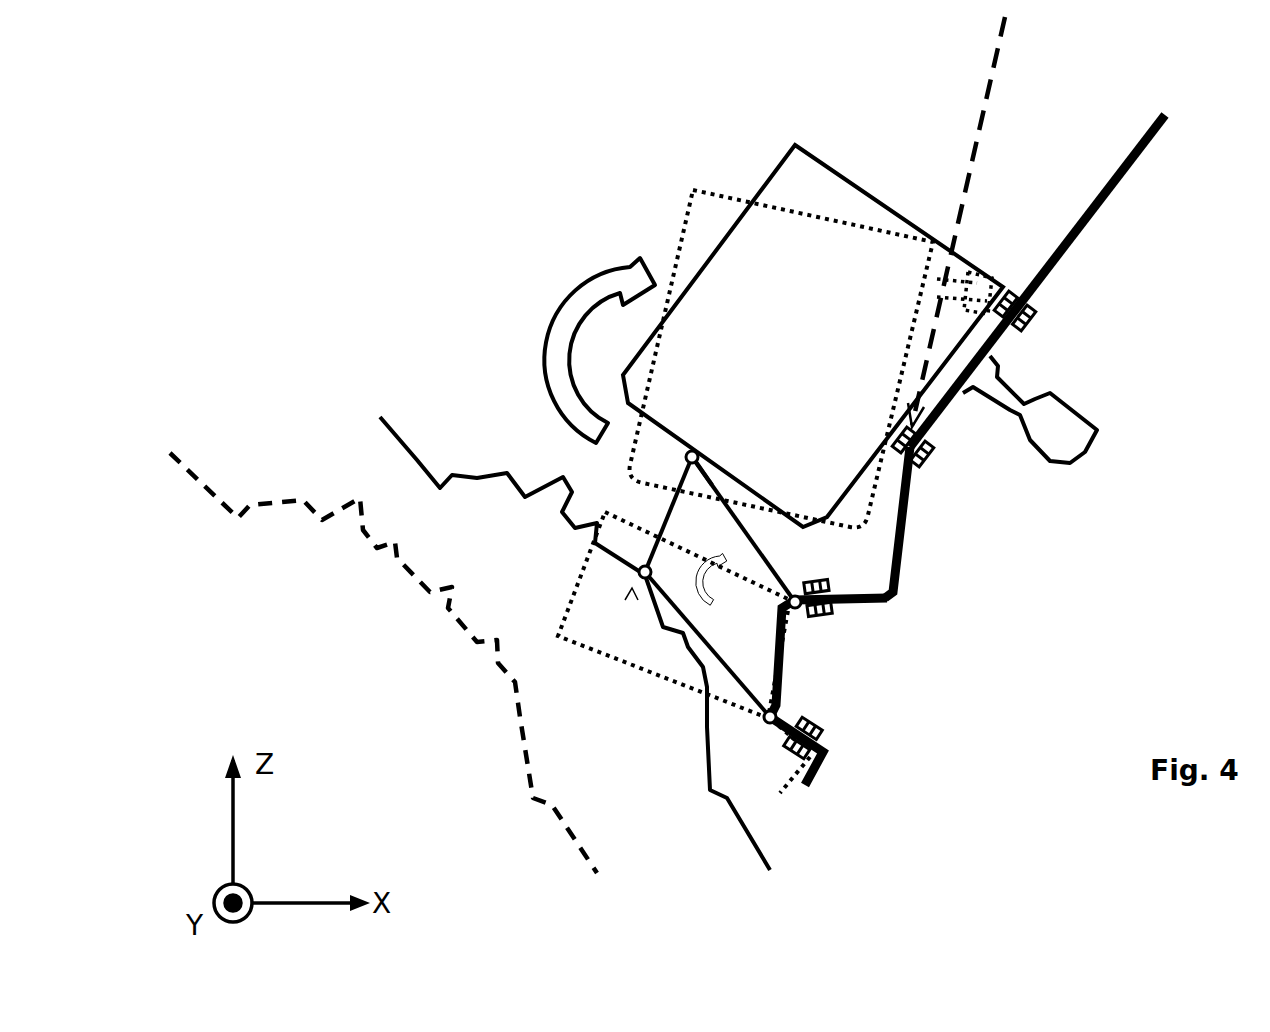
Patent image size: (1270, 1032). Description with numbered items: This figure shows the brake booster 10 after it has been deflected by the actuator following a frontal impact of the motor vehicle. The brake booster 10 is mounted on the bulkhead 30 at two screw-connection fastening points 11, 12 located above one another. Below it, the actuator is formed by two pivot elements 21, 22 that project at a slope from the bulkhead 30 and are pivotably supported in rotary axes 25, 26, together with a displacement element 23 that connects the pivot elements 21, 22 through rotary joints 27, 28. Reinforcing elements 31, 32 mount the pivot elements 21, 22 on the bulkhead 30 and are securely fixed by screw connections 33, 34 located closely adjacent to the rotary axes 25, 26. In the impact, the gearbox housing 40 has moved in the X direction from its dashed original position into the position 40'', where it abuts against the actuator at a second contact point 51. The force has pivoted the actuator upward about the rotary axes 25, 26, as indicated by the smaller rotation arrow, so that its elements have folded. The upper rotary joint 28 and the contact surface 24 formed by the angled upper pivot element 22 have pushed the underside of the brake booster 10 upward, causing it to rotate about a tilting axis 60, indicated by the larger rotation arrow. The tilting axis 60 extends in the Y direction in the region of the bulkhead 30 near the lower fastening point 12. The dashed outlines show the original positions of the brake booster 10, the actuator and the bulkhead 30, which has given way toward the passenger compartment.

The brake booster 10 is at (816, 180).
The fastening point 11 is at (1037, 314).
The lower fastening point 12 is at (947, 450).
The pivot element 21 is at (727, 673).
The upper pivot element 22 is at (742, 507).
The displacement element 23 is at (663, 520).
The contact surface 24 is at (706, 476).
The rotary axis 25 is at (770, 725).
The rotary axis 26 is at (787, 597).
The lower rotary joint 27 is at (636, 578).
The upper rotary joint 28 is at (693, 453).
The bulkhead 30 is at (1127, 180).
The reinforcing element 31 is at (790, 787).
The reinforcing element 32 is at (860, 590).
The screw connection 33 is at (827, 727).
The screw connection 34 is at (833, 610).
The gearbox housing 40 is at (383, 663).
The gearbox housing position 40'' is at (575, 584).
The second contact point 51 is at (632, 588).
The tilting axis 60 is at (913, 470).